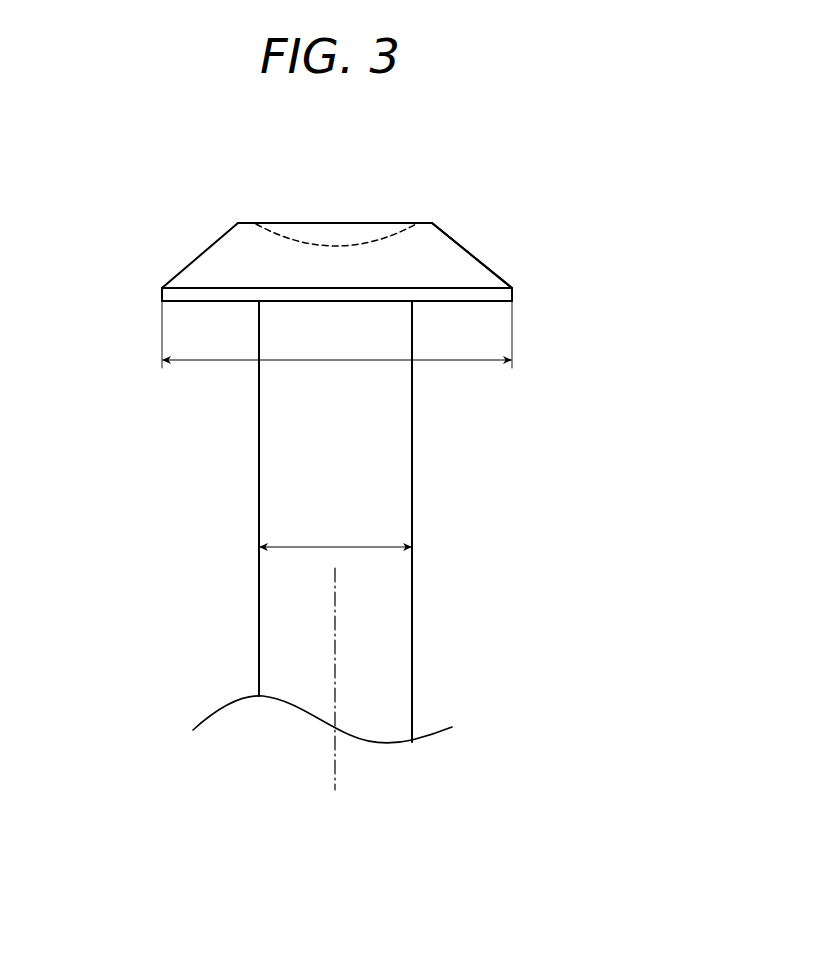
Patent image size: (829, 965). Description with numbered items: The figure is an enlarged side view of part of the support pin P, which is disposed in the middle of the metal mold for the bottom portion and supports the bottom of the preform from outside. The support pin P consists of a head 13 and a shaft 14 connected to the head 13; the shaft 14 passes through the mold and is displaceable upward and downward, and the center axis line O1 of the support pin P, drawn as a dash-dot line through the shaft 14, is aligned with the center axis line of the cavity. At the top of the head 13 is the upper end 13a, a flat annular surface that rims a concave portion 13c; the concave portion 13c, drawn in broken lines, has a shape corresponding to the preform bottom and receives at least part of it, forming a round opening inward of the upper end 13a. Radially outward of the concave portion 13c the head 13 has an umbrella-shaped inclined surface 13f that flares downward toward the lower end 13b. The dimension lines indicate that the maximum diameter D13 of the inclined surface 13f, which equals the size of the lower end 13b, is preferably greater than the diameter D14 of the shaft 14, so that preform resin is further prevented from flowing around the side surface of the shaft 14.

The support pin P is at (132, 265).
The head 13 is at (450, 235).
The upper end 13a is at (427, 223).
The lower end 13b is at (202, 301).
The concave portion 13c is at (337, 246).
The inclined surface 13f is at (468, 250).
The shaft 14 is at (413, 453).
The center axis line O1 is at (336, 697).
The maximum diameter of the head D13 is at (337, 335).
The diameter of the shaft D14 is at (335, 532).